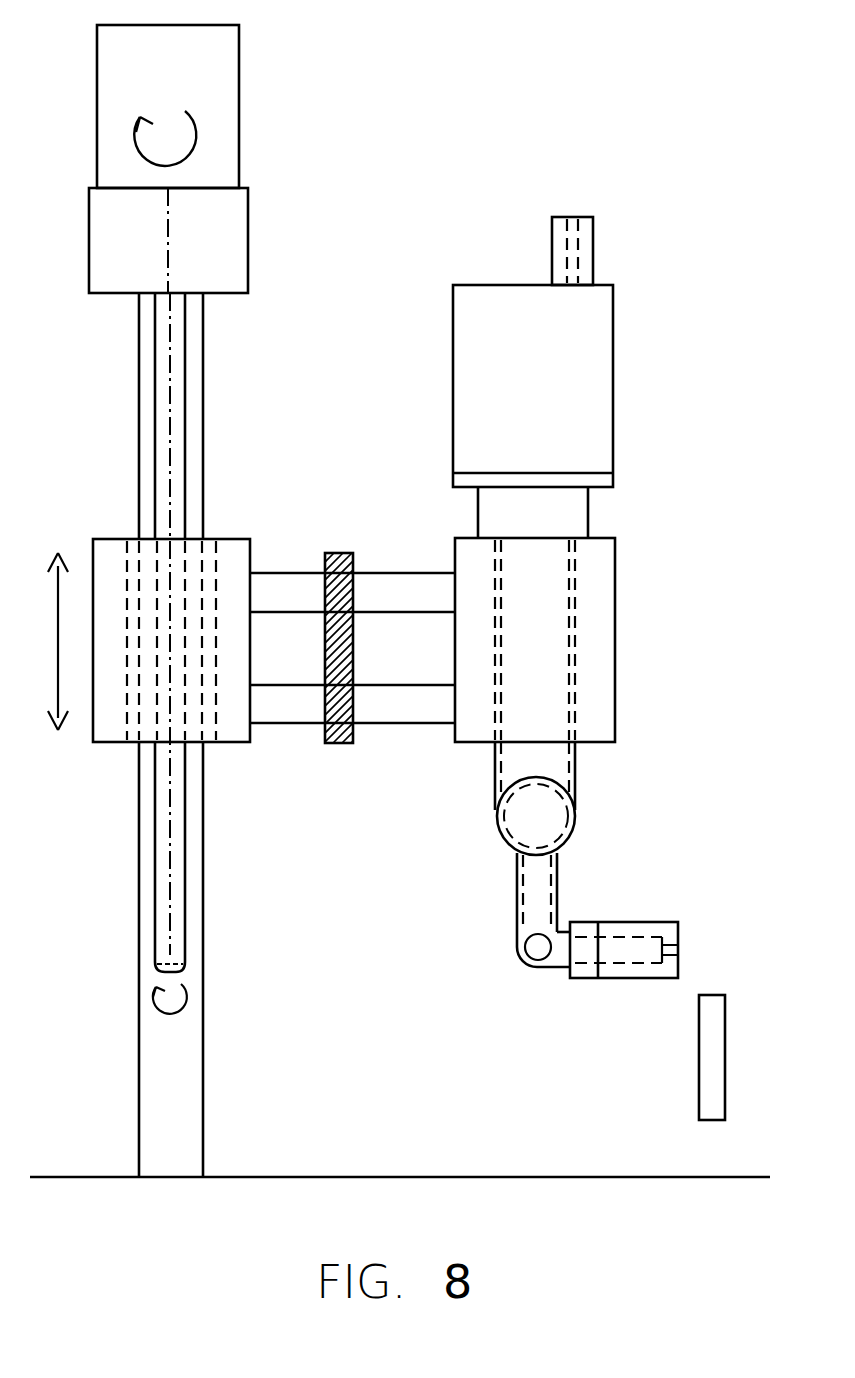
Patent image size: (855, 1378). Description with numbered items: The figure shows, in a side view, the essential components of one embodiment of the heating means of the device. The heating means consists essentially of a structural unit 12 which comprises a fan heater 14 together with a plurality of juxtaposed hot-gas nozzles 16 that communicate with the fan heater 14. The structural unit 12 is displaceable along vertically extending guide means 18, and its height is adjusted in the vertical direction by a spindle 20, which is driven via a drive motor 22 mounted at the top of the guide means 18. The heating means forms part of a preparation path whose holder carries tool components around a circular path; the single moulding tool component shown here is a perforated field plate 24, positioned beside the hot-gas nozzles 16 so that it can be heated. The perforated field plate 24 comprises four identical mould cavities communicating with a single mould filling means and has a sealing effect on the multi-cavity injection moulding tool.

The structural unit 12 is at (645, 518).
The fan heater 14 is at (602, 386).
The hot-gas nozzles 16 is at (633, 937).
The guide means 18 is at (215, 426).
The spindle 20 is at (170, 408).
The drive motor 22 is at (238, 108).
The perforated field plate 24 is at (716, 1021).